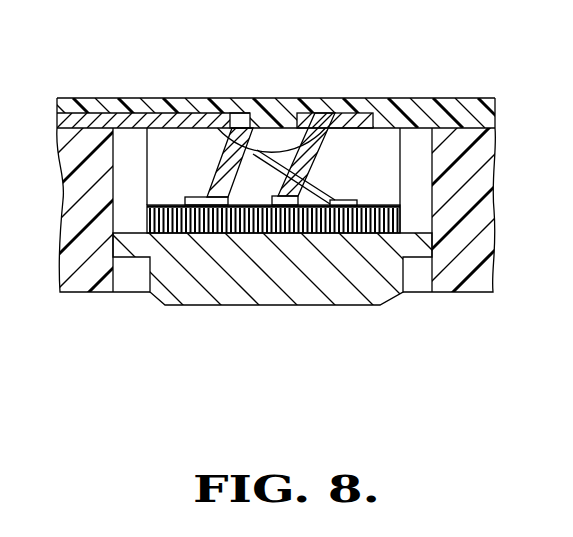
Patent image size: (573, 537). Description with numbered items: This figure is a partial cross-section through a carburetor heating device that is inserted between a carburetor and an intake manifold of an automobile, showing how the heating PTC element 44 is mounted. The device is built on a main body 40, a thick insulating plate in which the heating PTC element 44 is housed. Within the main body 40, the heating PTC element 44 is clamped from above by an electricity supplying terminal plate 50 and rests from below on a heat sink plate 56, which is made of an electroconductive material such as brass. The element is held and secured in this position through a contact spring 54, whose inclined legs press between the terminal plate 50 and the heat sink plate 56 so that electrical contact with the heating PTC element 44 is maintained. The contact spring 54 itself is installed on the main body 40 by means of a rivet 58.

The main body 40 is at (427, 97).
The heating PTC element 44 is at (253, 228).
The electricity supplying terminal plate 50 is at (118, 122).
The contact spring 54 is at (213, 160).
The heat sink plate 56 is at (332, 292).
The rivet 58 is at (255, 140).